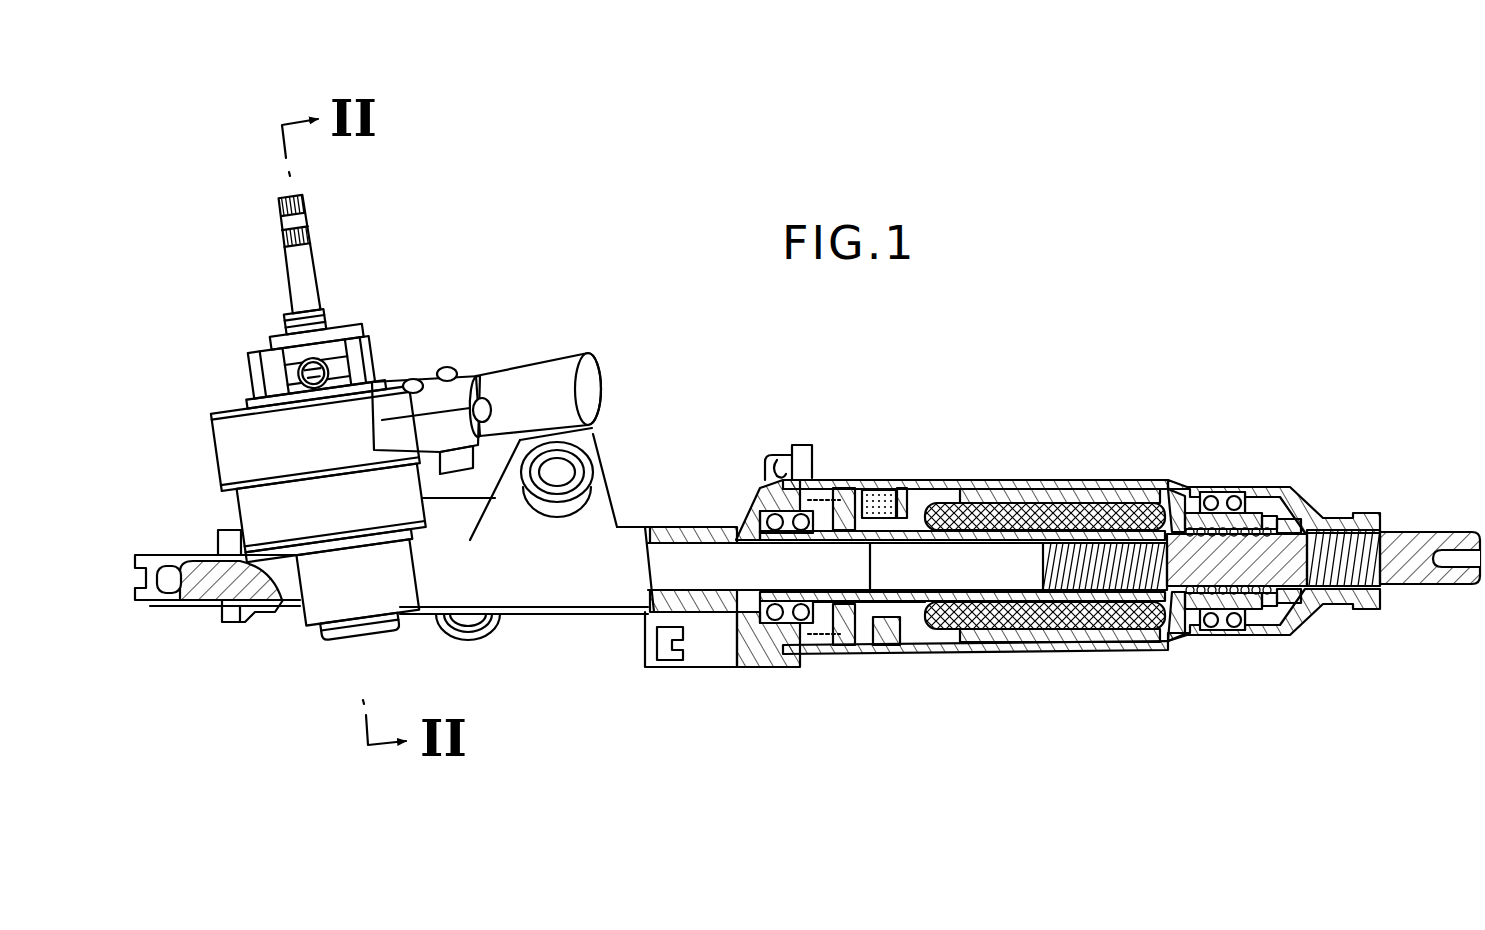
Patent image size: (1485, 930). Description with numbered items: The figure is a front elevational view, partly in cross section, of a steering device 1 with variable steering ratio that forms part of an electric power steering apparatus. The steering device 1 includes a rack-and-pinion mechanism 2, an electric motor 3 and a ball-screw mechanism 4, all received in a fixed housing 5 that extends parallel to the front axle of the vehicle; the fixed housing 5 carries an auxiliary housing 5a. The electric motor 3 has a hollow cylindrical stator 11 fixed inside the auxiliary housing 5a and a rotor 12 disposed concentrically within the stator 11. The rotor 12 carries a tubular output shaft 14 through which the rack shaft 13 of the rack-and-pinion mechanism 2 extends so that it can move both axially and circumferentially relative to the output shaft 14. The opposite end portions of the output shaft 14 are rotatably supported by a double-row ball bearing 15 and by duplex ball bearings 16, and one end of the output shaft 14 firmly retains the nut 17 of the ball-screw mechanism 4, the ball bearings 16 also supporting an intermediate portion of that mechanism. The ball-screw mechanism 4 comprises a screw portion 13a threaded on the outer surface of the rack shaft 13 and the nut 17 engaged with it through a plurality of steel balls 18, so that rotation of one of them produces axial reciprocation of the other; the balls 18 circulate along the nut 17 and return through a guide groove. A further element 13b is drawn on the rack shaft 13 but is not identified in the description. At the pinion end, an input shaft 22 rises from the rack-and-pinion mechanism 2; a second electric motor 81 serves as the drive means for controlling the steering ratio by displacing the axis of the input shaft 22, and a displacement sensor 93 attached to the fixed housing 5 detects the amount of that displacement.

The steering device 1 is at (172, 240).
The rack-and-pinion mechanism 2 is at (258, 605).
The electric motor 3 is at (922, 476).
The ball-screw mechanism 4 is at (1184, 492).
The fixed housing 5 is at (561, 590).
The auxiliary housing 5a is at (1055, 478).
The stator 11 is at (1002, 655).
The rotor 12 is at (1068, 655).
The rack shaft 13 is at (712, 572).
The screw portion 13a is at (1125, 655).
The tie rod end 13b is at (193, 602).
The tubular output shaft 14 is at (1185, 640).
The double-row ball bearing 15 is at (783, 640).
The duplex ball bearings 16 is at (1210, 640).
The nut 17 is at (1270, 640).
The steel balls 18 is at (1267, 500).
The input shaft 22 is at (303, 270).
The electric motor 81 is at (540, 378).
The displacement sensor 93 is at (465, 395).